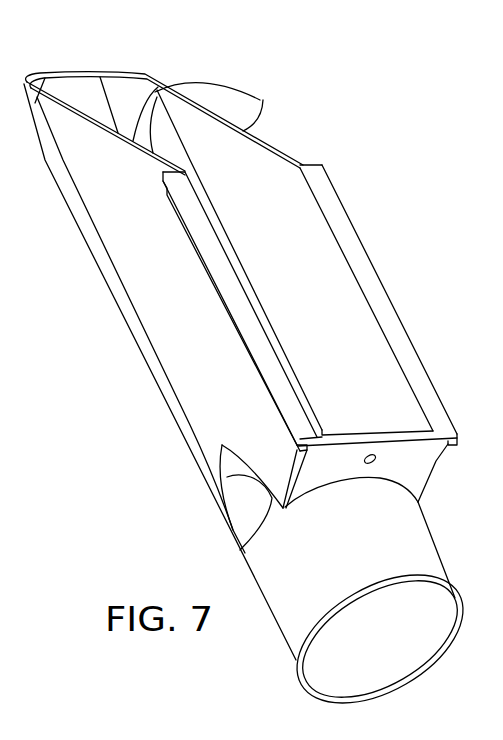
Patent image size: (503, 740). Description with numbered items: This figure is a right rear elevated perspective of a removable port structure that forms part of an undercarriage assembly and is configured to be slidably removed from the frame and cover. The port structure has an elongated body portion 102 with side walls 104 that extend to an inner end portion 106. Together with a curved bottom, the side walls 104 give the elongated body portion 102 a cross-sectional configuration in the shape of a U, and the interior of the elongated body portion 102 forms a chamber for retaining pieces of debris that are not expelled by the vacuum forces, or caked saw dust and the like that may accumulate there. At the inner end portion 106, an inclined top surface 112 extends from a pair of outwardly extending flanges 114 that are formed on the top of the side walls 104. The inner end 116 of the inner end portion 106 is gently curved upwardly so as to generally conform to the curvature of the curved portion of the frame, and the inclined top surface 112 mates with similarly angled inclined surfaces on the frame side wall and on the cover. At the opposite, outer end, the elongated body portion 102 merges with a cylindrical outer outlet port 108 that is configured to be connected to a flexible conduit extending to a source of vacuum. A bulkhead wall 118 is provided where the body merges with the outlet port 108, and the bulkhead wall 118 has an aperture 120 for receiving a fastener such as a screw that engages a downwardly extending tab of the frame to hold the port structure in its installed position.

The elongated body portion 102 is at (202, 370).
The side walls 104 is at (170, 303).
The inner end portion 106 is at (167, 61).
The cylindrical outer outlet port 108 is at (410, 548).
The inclined top surface 112 is at (258, 100).
The outwardly extending flanges 114 is at (394, 328).
The inner end 116 is at (75, 92).
The bulkhead wall 118 is at (407, 463).
The aperture 120 is at (371, 466).